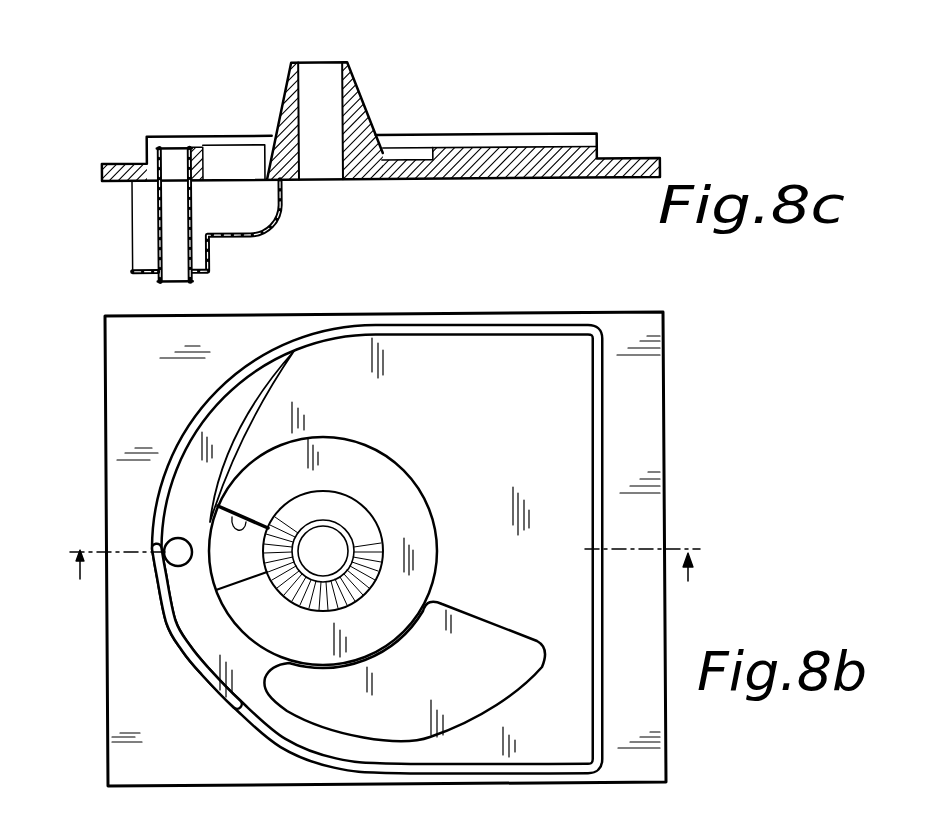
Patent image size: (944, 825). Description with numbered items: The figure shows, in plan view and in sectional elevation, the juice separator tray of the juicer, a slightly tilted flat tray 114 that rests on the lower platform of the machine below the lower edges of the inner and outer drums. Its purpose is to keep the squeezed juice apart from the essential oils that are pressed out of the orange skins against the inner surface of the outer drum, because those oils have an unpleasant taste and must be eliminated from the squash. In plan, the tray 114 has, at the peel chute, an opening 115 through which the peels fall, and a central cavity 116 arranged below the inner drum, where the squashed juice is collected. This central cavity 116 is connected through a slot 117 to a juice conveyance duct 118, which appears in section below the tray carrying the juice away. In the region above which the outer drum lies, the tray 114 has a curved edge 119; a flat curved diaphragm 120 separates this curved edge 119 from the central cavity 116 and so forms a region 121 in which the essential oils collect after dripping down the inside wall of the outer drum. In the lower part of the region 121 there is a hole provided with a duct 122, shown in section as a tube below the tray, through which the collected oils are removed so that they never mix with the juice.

In FIG. 8B, the flat tray 114 is at (642, 367).
In FIG. 8B, the opening 115 is at (472, 626).
In FIG. 8B, the central cavity 116 is at (397, 512).
In FIG. 8C, the slot 117 is at (232, 150).
In FIG. 8B, the slot 117 is at (255, 518).
In FIG. 8C, the juice conveyance duct 118 is at (255, 210).
In FIG. 8B, the curved edge 119 is at (184, 431).
In FIG. 8B, the flat curved diaphragm 120 is at (273, 383).
In FIG. 8B, the region 121 is at (207, 623).
In FIG. 8C, the duct 122 is at (178, 197).